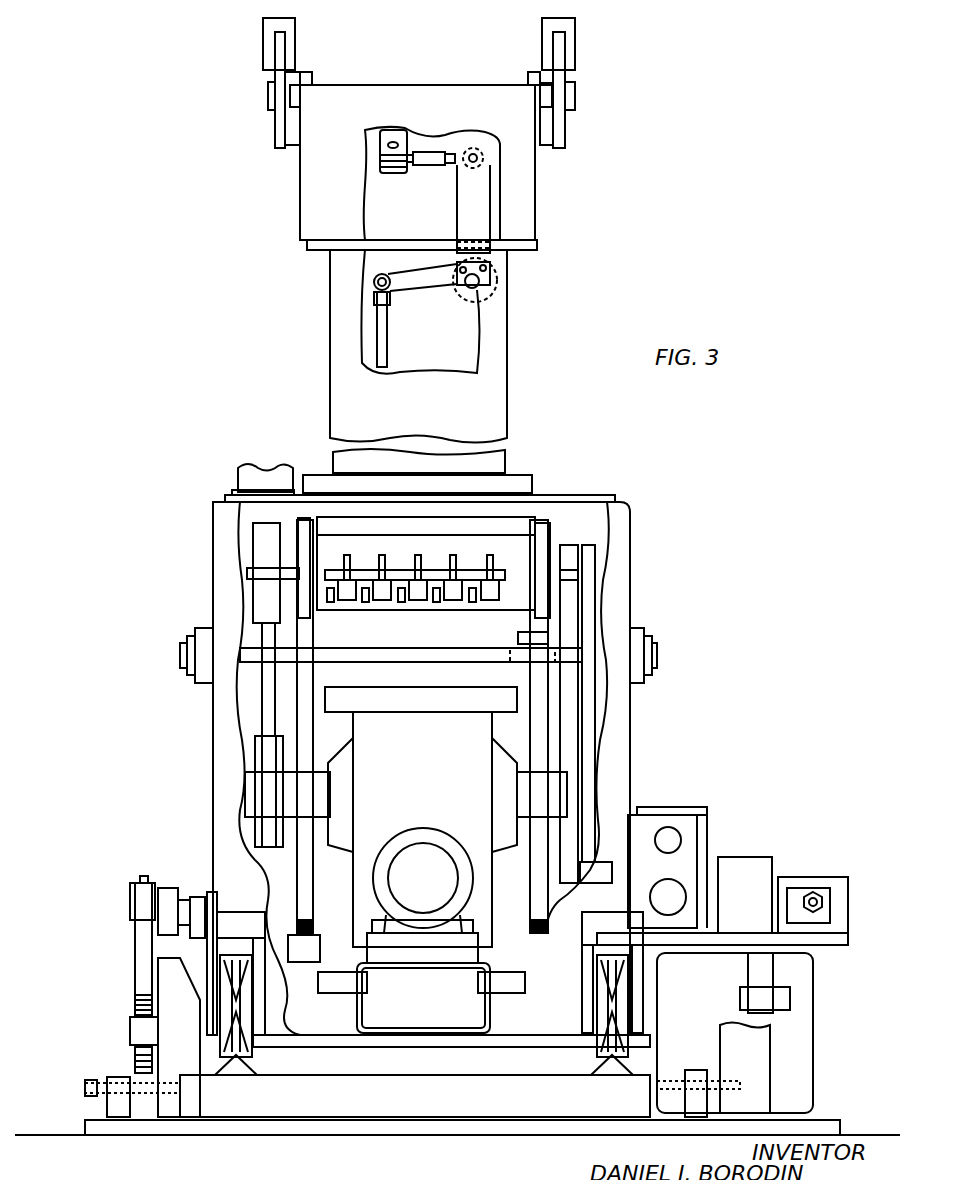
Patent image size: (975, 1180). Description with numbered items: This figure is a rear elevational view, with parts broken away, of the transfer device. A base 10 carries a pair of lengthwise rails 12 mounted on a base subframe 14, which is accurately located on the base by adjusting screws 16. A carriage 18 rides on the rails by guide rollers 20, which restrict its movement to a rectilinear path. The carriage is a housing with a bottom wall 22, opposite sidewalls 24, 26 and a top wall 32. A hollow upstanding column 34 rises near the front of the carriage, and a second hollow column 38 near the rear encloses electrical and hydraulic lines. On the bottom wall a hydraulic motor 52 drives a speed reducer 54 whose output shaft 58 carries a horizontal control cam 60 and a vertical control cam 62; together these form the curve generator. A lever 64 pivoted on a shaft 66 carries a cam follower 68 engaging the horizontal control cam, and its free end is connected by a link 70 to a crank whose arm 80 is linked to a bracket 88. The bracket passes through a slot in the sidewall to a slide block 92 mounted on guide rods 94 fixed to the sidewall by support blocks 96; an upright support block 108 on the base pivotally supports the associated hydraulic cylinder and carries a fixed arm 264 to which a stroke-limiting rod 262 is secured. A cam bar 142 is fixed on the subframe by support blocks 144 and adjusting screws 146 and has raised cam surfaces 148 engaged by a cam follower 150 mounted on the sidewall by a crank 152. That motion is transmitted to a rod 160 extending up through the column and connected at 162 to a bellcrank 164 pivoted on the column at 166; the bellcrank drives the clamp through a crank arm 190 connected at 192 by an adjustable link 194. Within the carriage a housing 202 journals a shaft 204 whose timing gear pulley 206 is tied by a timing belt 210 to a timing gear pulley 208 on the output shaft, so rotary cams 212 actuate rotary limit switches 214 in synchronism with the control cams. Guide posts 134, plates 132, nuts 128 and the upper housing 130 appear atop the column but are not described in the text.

The base 10 is at (310, 1130).
The rails 12 is at (255, 1072).
The base subframe 14 is at (205, 1105).
The adjusting screws 16 is at (92, 1085).
The carriage 18 is at (613, 497).
The guide rollers 20 is at (220, 1010).
The bottom wall 22 is at (415, 1045).
The sidewall 24 is at (635, 722).
The sidewall 26 is at (213, 758).
The top wall 32 is at (565, 495).
The column 34 is at (510, 357).
The second hollow column 38 is at (240, 475).
The hydraulic motor 52 is at (422, 860).
The speed reducer 54 is at (460, 687).
The output shaft 58 is at (565, 785).
The horizontal control cam 60 is at (520, 868).
The vertical control cam 62 is at (345, 862).
The lever 64 is at (572, 660).
The shaft 66 is at (395, 660).
The cam follower 68 is at (525, 637).
The link 70 is at (595, 588).
The arm 80 is at (578, 702).
The bracket 88 is at (600, 868).
The slide block 92 is at (700, 815).
The guide rods 94 is at (672, 840).
The support blocks 96 is at (655, 815).
The upright support block 108 is at (752, 872).
The nut 128 is at (280, 115).
The upper housing 130 is at (545, 140).
The plate 132 is at (567, 97).
The post 134 is at (295, 45).
The cam bar 142 is at (138, 940).
The support blocks 144 is at (165, 985).
The adjusting screws 146 is at (135, 1002).
The raised cam surfaces 148 is at (133, 905).
The cam follower 150 is at (135, 893).
The crank 152 is at (172, 890).
The rod 160 is at (390, 345).
The connection 162 is at (380, 283).
The bellcrank 164 is at (468, 203).
The pivot support 166 is at (495, 288).
The crank arm 190 is at (395, 115).
The connection 192 is at (478, 146).
The adjustable link 194 is at (430, 150).
The housing 202 is at (525, 555).
The shaft 204 is at (345, 547).
The timing gear pulley 206 is at (255, 548).
The timing gear pulley 208 is at (258, 777).
The timing belt 210 is at (300, 707).
The rotary cams 212 is at (395, 568).
The rotary limit switches 214 is at (330, 612).
The rod 262 is at (823, 902).
The fixed arm 264 is at (800, 920).